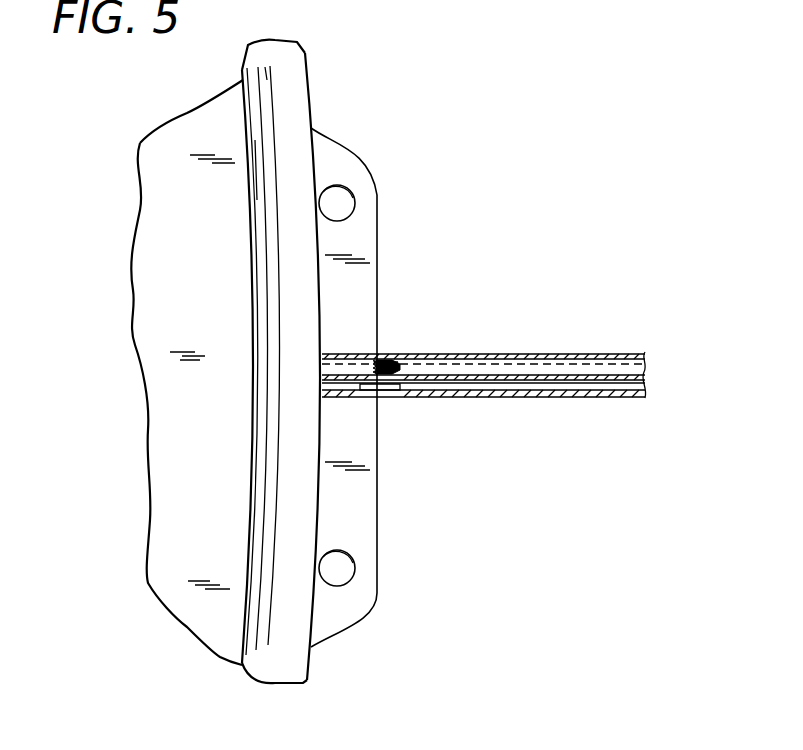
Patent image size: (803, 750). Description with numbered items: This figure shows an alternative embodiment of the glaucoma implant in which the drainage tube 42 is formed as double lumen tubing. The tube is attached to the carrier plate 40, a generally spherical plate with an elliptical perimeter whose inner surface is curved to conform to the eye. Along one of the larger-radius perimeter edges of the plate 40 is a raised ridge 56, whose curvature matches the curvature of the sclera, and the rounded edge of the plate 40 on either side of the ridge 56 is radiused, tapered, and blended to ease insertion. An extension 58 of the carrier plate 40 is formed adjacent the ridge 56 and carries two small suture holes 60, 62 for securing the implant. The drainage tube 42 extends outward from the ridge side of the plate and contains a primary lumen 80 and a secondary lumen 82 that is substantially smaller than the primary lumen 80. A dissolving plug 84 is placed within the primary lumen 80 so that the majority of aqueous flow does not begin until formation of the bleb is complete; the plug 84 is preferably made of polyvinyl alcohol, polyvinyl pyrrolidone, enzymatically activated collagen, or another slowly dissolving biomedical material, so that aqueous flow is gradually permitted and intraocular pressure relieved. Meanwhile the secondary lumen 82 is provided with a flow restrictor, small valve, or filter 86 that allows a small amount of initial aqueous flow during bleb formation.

The carrier plate 40 is at (162, 145).
The drainage tube 42 is at (592, 397).
The raised ridge 56 is at (282, 55).
The extension 58 is at (333, 158).
The suture hole 60 is at (342, 200).
The suture hole 62 is at (342, 567).
The primary lumen 80 is at (627, 368).
The secondary lumen 82 is at (623, 385).
The dissolving plug 84 is at (391, 358).
The flow restrictor, small valve, or filter 86 is at (402, 395).